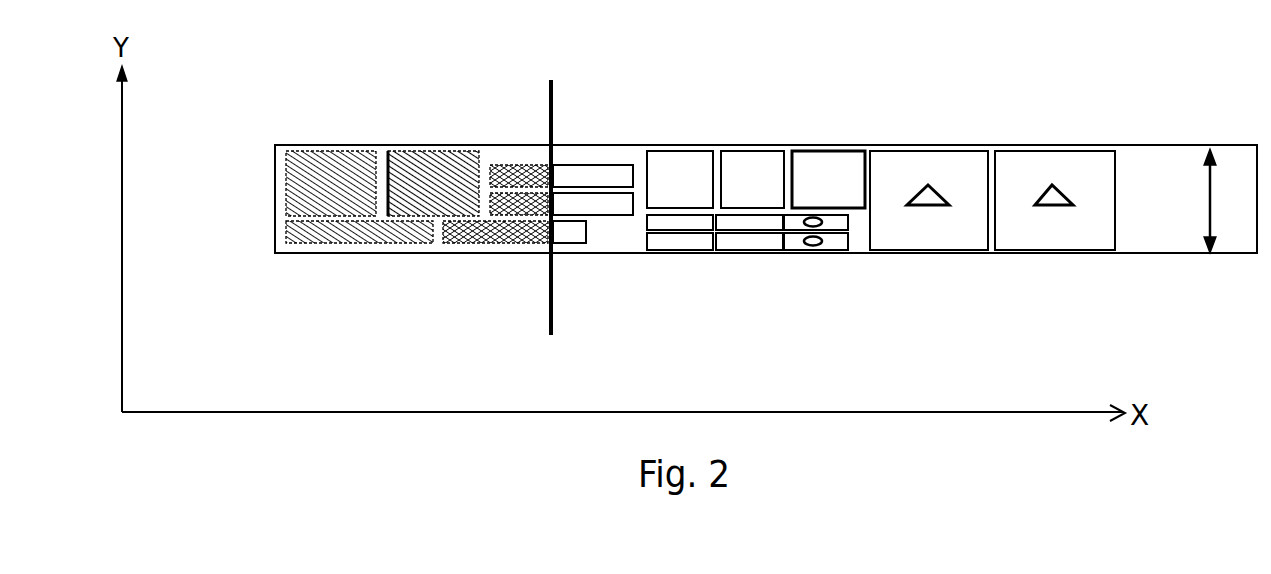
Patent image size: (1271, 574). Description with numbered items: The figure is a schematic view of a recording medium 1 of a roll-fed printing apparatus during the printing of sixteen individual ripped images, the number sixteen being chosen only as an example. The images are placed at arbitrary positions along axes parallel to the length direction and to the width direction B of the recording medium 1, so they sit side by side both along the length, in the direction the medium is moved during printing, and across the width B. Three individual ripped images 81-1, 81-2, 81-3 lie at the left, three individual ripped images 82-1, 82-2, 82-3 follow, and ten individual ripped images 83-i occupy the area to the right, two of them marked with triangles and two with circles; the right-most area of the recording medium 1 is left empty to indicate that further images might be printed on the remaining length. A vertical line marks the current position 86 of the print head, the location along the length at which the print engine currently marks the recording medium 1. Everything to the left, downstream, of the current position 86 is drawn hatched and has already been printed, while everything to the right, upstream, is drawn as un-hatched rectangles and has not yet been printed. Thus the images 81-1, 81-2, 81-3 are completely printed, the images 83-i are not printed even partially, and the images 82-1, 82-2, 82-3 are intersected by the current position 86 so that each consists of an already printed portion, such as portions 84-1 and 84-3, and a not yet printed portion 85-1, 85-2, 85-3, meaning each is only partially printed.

The recording medium 1 is at (1155, 167).
The individual ripped image 81-1 is at (318, 178).
The individual ripped image 81-2 is at (308, 237).
The individual ripped image 81-3 is at (437, 173).
The individual ripped image 82-1 is at (552, 110).
The individual ripped image 82-2 is at (555, 277).
The individual ripped image 82-3 is at (481, 177).
The individual ripped images 83-i is at (1110, 141).
The already printed portion 84-1 is at (520, 183).
The already printed portion 84-3 is at (468, 232).
The not yet printed portion 85-1 is at (607, 173).
The not yet printed portion 85-2 is at (593, 259).
The not yet printed portion 85-3 is at (577, 238).
The current position 86 is at (551, 327).
The width direction B is at (1210, 198).